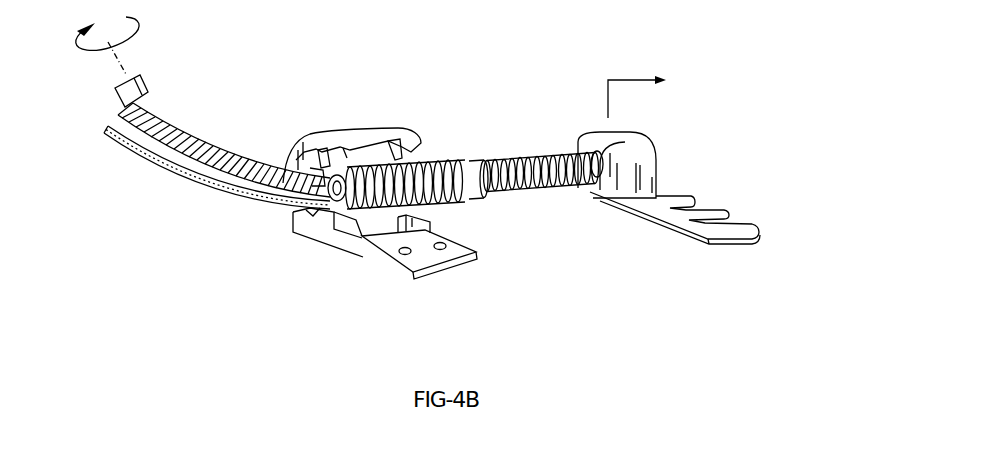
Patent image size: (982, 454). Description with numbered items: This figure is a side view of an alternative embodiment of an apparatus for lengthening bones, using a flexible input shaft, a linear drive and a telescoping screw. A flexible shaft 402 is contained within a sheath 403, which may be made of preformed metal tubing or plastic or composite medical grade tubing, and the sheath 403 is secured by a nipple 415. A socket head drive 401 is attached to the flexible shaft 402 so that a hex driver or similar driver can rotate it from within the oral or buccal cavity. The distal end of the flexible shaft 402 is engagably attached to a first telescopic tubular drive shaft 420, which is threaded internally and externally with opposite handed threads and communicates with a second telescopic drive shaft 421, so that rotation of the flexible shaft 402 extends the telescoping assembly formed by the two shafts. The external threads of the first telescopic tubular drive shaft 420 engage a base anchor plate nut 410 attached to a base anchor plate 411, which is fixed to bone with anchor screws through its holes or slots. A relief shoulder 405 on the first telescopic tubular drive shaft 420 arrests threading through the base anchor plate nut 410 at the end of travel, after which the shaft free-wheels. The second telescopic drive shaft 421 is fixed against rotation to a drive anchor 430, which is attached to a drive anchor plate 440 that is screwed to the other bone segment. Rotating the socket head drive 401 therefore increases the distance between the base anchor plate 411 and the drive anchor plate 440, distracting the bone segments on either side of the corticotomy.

The socket head drive 401 is at (145, 82).
The flexible shaft 402 is at (183, 167).
The sheath 403 is at (238, 195).
The relief shoulder 405 is at (346, 170).
The base anchor plate nut 410 is at (402, 130).
The base anchor plate 411 is at (390, 258).
The nipple 415 is at (313, 216).
The first telescopic tubular drive shaft 420 is at (458, 200).
The second telescopic drive shaft 421 is at (540, 183).
The drive anchor 430 is at (655, 167).
The drive anchor plate 440 is at (697, 225).